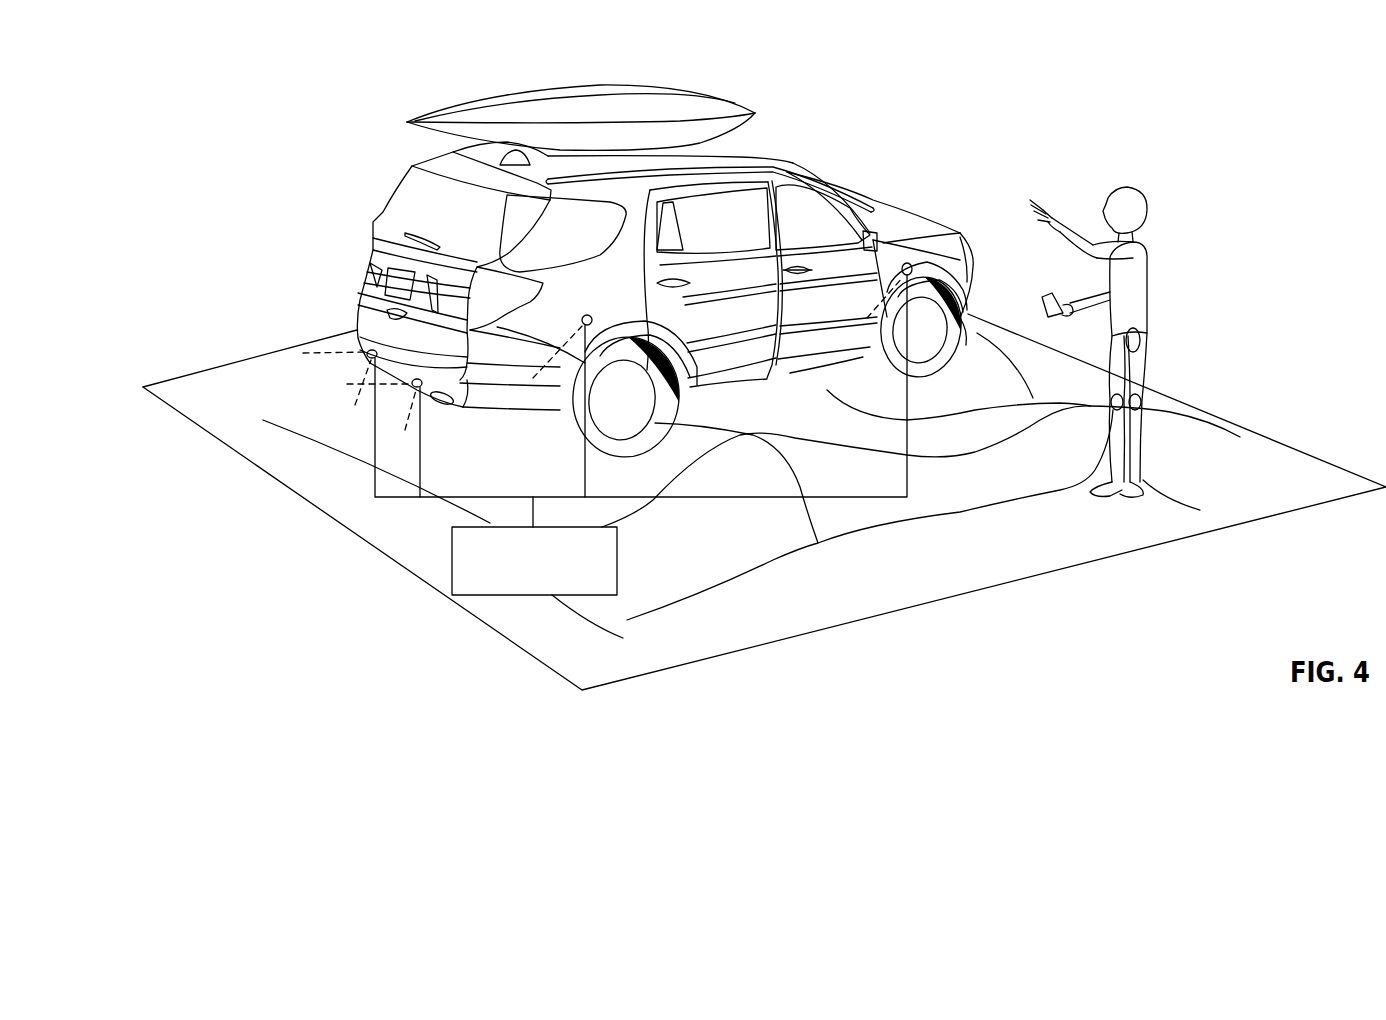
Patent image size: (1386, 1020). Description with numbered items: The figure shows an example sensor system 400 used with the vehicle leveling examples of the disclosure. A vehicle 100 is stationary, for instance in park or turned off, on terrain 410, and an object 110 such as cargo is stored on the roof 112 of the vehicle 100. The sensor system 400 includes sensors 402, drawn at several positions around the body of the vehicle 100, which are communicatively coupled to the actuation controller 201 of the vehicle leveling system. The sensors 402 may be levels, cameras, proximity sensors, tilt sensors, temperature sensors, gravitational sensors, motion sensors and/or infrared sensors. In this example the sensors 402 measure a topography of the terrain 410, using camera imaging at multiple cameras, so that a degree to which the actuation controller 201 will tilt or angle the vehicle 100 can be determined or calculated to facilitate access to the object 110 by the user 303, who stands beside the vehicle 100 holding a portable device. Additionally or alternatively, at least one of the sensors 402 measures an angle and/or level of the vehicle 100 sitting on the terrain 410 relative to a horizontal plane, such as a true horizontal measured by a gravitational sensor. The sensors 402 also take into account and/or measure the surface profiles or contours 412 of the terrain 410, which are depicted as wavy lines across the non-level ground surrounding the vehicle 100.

The vehicle 100 is at (667, 266).
The object 110 is at (483, 105).
The roof 112 is at (750, 158).
The actuation controller 201 is at (617, 548).
The user 303 is at (1138, 188).
The sensor system 400 is at (1140, 102).
The sensors 402 is at (373, 358).
The terrain 410 is at (1284, 443).
The surface profiles or contours 412 is at (832, 440).